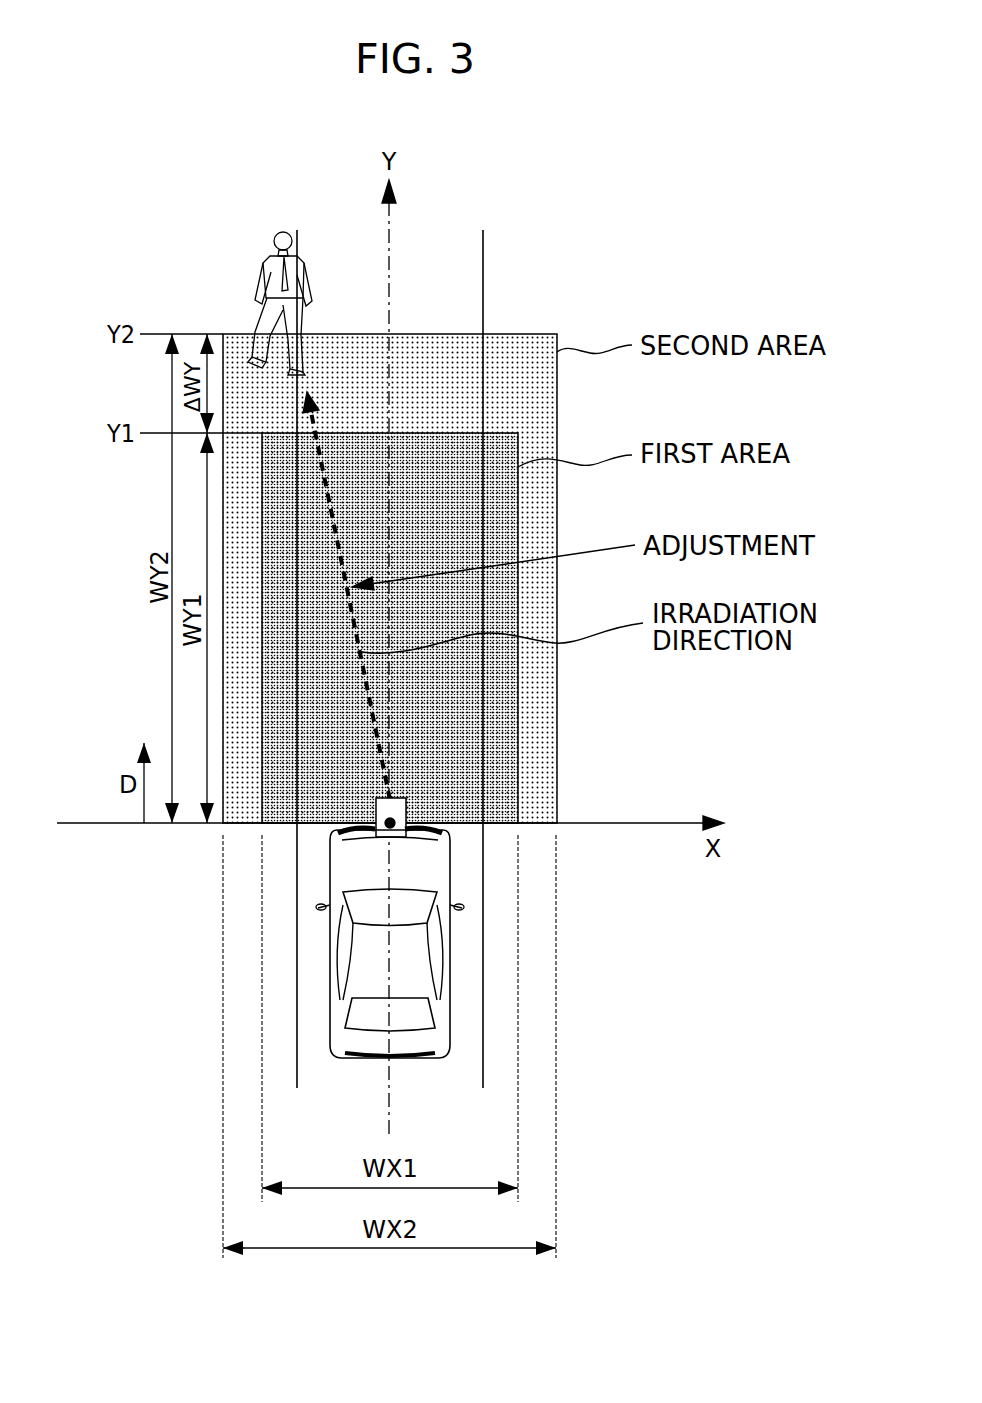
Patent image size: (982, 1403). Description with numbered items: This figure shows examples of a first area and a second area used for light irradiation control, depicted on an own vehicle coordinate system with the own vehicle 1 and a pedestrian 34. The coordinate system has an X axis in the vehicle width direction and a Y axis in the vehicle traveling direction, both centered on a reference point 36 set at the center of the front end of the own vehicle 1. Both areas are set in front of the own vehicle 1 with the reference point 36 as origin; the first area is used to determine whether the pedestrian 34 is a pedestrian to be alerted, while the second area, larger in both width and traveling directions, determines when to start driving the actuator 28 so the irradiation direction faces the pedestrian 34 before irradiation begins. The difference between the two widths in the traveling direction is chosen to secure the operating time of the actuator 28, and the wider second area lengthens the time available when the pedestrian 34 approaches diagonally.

The own vehicle 1 is at (338, 997).
The actuator 28 is at (406, 805).
The pedestrian 34 is at (259, 277).
The reference point 36 is at (387, 829).